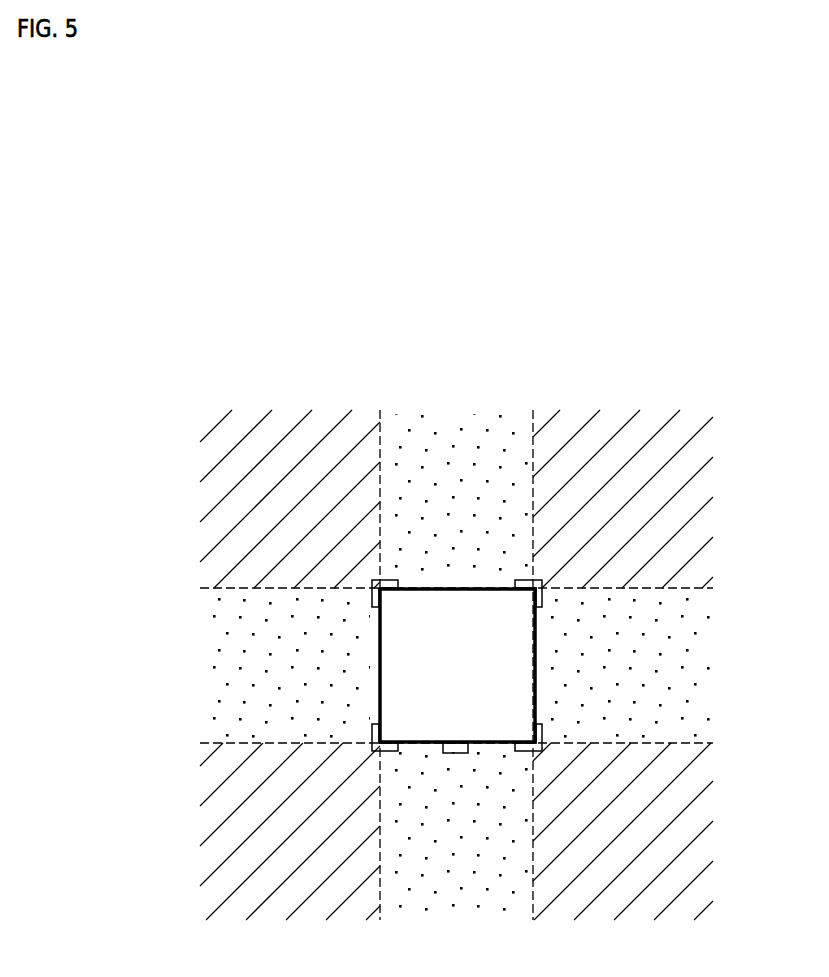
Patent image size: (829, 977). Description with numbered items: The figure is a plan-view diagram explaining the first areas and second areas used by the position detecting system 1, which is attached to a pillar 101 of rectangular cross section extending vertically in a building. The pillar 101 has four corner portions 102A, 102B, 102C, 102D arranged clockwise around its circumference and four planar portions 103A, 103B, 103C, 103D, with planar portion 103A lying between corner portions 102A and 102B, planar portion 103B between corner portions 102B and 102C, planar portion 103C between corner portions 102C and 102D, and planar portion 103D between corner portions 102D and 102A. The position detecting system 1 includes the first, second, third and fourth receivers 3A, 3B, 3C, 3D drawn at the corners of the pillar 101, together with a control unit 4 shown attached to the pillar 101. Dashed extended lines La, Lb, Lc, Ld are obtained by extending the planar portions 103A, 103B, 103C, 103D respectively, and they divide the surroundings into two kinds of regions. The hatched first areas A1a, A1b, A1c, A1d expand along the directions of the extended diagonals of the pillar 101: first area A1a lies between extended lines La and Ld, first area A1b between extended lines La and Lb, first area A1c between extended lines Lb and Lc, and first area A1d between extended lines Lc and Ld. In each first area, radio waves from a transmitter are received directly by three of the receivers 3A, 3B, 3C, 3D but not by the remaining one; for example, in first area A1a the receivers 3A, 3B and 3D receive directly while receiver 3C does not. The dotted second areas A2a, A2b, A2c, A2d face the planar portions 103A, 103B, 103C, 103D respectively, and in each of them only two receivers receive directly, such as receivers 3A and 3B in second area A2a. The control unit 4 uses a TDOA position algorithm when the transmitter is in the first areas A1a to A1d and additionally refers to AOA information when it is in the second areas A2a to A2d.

The position detecting system 1 is at (457, 639).
The first receiver 3A is at (374, 582).
The second receiver 3B is at (541, 582).
The third receiver 3C is at (541, 750).
The fourth receiver 3D is at (374, 750).
The control unit 4 is at (468, 750).
The pillar 101 is at (478, 678).
The corner portion 102A is at (372, 598).
The corner portion 102B is at (542, 598).
The corner portion 102C is at (542, 732).
The corner portion 102D is at (372, 732).
The planar portion 103A is at (430, 586).
The planar portion 103B is at (537, 667).
The planar portion 103C is at (425, 745).
The planar portion 103D is at (379, 667).
The first area A1a is at (250, 425).
The first area A1b is at (642, 425).
The first area A1c is at (643, 910).
The first area A1d is at (250, 910).
The second area A2a is at (457, 425).
The second area A2b is at (696, 665).
The second area A2c is at (458, 908).
The second area A2d is at (210, 665).
The extended line La is at (210, 588).
The extended line Lb is at (535, 424).
The extended line Lc is at (210, 744).
The extended line Ld is at (379, 424).